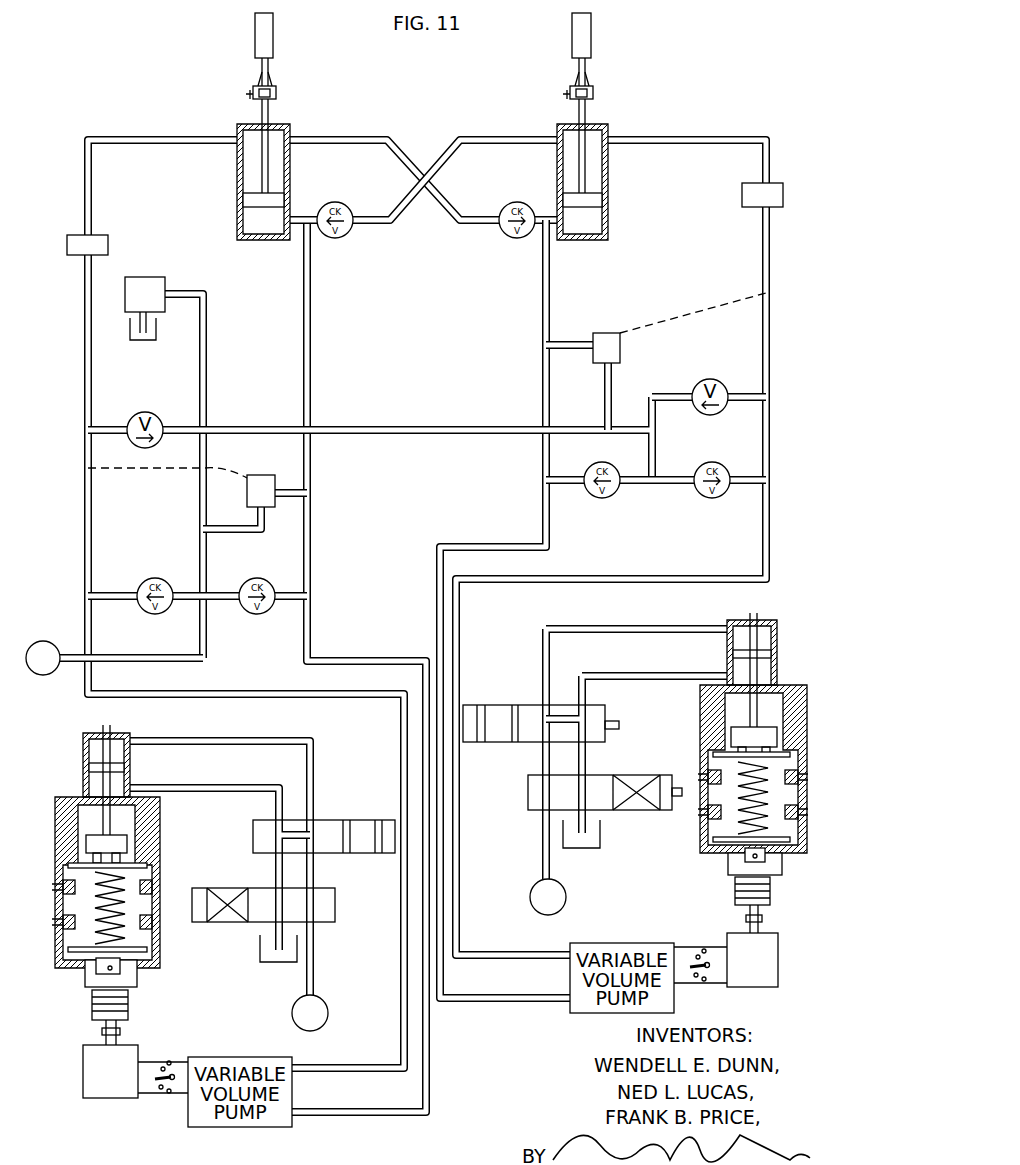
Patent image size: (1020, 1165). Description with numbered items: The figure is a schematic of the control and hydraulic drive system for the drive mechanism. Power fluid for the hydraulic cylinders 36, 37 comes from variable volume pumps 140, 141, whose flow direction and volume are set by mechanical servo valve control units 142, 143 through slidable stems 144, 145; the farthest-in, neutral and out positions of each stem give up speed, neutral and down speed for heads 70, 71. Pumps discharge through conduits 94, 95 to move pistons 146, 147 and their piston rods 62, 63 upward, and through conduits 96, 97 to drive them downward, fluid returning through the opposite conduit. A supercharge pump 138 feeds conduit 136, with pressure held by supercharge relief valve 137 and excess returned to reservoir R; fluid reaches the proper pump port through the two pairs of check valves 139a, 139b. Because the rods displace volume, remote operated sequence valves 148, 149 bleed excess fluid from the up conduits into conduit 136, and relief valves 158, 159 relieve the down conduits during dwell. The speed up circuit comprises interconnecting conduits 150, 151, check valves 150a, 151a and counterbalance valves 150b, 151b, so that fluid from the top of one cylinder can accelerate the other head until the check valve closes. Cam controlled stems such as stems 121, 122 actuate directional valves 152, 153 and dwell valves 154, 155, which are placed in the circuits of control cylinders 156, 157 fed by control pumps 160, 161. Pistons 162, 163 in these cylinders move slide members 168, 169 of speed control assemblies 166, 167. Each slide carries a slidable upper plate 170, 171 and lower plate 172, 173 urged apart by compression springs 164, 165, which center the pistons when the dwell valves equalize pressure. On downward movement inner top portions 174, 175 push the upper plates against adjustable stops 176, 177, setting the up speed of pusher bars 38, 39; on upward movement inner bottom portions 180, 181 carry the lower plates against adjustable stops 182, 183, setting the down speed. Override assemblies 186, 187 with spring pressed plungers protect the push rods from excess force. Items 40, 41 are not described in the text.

The hydraulic cylinder 36 is at (278, 124).
The hydraulic cylinder 37 is at (601, 124).
The pusher bar 38 is at (270, 78).
The pusher bar 39 is at (587, 78).
The nut 40 is at (277, 92).
The nut 41 is at (594, 92).
The piston rod 62 is at (250, 98).
The piston rod 63 is at (568, 100).
The head 70 is at (274, 21).
The head 71 is at (592, 22).
The conduit 94 is at (311, 270).
The conduit 95 is at (551, 270).
The conduit 96 is at (212, 140).
The conduit 97 is at (719, 140).
The cam controlled stem 121 is at (680, 800).
The cam controlled stem 122 is at (612, 721).
The supercharge conduit 136 is at (135, 658).
The supercharge relief valve 137 is at (165, 278).
The supercharge pump 138 is at (43, 641).
The pair of check valves 139a is at (224, 587).
The pair of check valves 139b is at (682, 512).
The variable volume pump 140 is at (226, 1128).
The variable volume pump 141 is at (580, 1012).
The mechanical servo valve control unit 142 is at (88, 1100).
The mechanical servo valve control unit 143 is at (779, 988).
The slidable stem 144 is at (104, 1038).
The slidable stem 145 is at (760, 927).
The piston 146 is at (256, 193).
The piston 147 is at (596, 197).
The remote operated sequence valve 148 is at (263, 475).
The remote operated sequence valve 149 is at (620, 350).
The interconnecting conduit 150 is at (433, 156).
The check valve 150a is at (508, 237).
The counterbalance valve 150b is at (109, 245).
The interconnecting conduit 151 is at (454, 158).
The check valve 151a is at (352, 237).
The counterbalance valve 151b is at (742, 197).
The directional valve 152 is at (332, 893).
The directional valve 153 is at (531, 777).
The dwell valve 154 is at (355, 820).
The dwell valve 155 is at (497, 705).
The control cylinder 156 is at (130, 766).
The control cylinder 157 is at (778, 644).
The relief valve 158 is at (152, 413).
The relief valve 159 is at (712, 390).
The control pump 160 is at (322, 1028).
The control pump 161 is at (530, 892).
The piston 162 is at (84, 768).
The piston 163 is at (733, 654).
The compression spring 164 is at (95, 909).
The compression spring 165 is at (770, 804).
The speed control assembly 166 is at (51, 895).
The speed control assembly 167 is at (848, 769).
The slide member 168 is at (130, 977).
The slide member 169 is at (786, 726).
The upper plate 170 is at (132, 840).
The upper plate 171 is at (788, 757).
The lower plate 172 is at (147, 958).
The lower plate 173 is at (708, 849).
The inner top portion 174 is at (80, 838).
The inner top portion 175 is at (714, 755).
The adjustable stop 176 is at (148, 885).
The adjustable stop 177 is at (770, 762).
The inner bottom portion 180 is at (96, 966).
The inner bottom portion 181 is at (765, 860).
The adjustable stop 182 is at (149, 922).
The adjustable stop 183 is at (796, 811).
The override assembly 186 is at (85, 1019).
The override assembly 187 is at (812, 904).